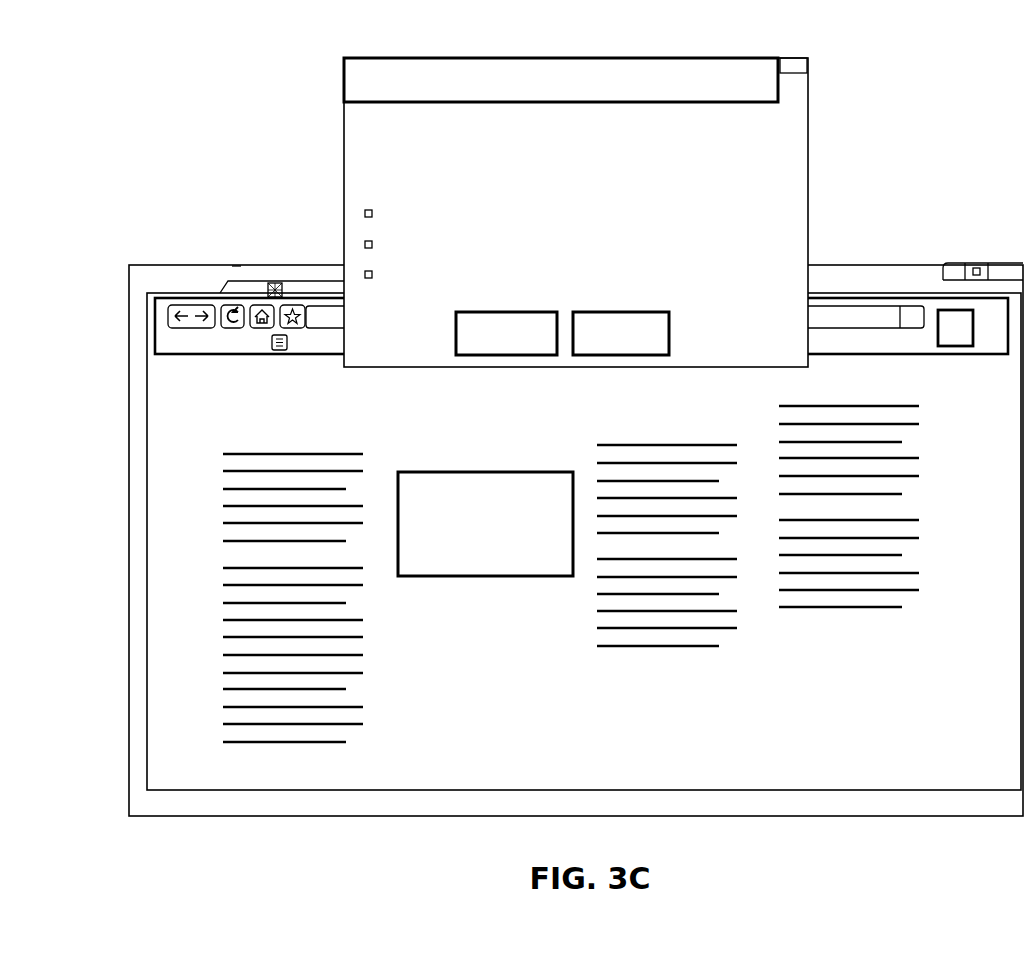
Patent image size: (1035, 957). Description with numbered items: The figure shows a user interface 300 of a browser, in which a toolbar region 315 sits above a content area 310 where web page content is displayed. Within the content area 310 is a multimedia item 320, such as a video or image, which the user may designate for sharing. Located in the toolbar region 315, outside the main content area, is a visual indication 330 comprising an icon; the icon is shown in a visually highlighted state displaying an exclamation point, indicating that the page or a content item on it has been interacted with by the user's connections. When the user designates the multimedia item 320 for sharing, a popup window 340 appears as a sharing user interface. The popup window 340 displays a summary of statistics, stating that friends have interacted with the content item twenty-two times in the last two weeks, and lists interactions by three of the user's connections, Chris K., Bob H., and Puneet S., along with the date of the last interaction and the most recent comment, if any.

The user interface 300 is at (131, 266).
The content area 310 is at (196, 781).
The toolbar region 315 is at (163, 297).
The multimedia item 320 is at (401, 471).
The visual indication 330 is at (939, 309).
The popup window 340 is at (348, 58).